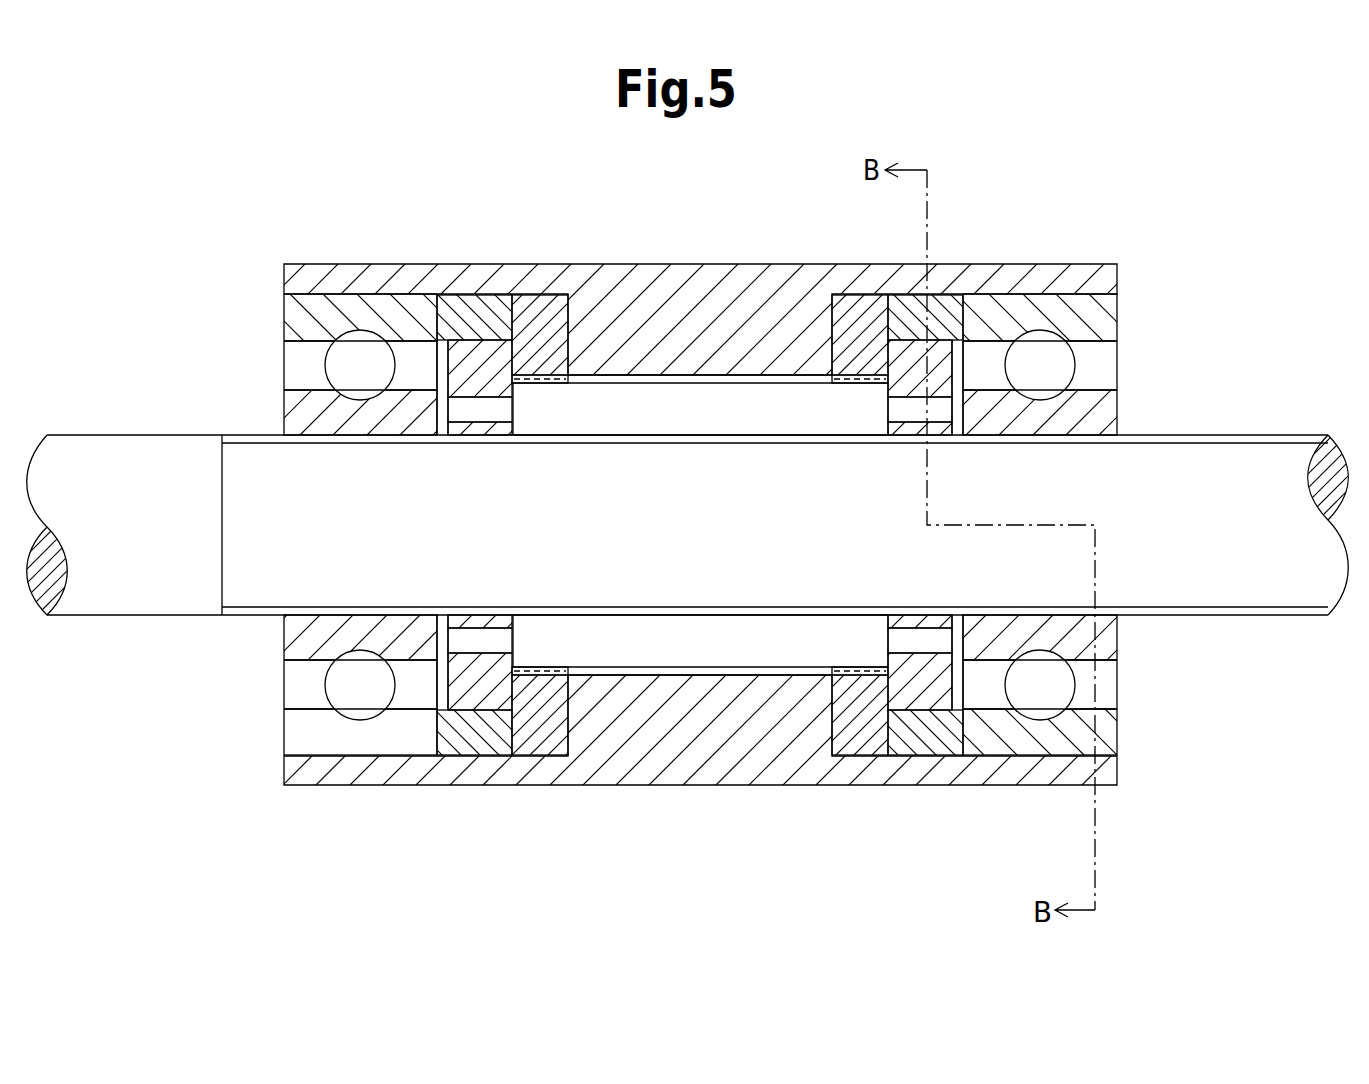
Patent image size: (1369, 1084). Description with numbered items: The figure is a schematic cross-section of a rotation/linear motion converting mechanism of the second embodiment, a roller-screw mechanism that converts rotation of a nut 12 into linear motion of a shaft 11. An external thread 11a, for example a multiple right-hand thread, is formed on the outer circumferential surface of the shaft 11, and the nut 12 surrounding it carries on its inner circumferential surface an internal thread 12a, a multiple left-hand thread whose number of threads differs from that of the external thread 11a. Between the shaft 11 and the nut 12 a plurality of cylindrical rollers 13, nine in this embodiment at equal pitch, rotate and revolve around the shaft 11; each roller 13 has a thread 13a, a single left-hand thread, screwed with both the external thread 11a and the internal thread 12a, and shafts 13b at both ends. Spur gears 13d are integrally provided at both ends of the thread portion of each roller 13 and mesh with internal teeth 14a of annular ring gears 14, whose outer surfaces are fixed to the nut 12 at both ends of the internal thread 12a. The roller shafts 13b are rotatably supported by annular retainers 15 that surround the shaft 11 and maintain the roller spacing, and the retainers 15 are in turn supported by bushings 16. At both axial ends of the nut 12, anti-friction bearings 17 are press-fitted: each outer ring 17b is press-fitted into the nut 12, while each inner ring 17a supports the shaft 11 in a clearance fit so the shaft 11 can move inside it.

The shaft 11 is at (130, 435).
The external thread 11a is at (253, 440).
The nut 12 is at (797, 263).
The internal thread 12a is at (740, 372).
The roller 13 is at (660, 394).
The thread 13a is at (707, 438).
The shaft 13b is at (483, 412).
The spur gear 13d is at (549, 440).
The ring gear 14 is at (538, 330).
The internal teeth 14a is at (582, 372).
The retainer 15 is at (495, 370).
The bushing 16 is at (452, 304).
The bearing 17 is at (302, 326).
The inner ring 17a is at (1103, 407).
The outer ring 17b is at (1103, 316).